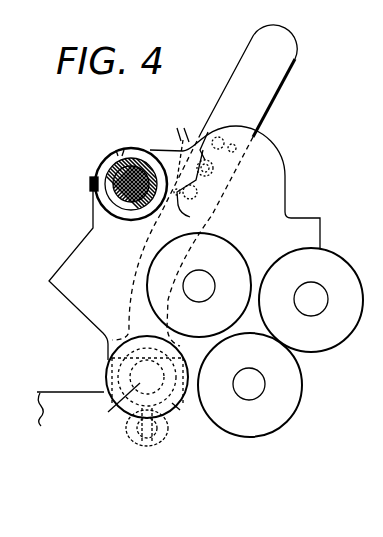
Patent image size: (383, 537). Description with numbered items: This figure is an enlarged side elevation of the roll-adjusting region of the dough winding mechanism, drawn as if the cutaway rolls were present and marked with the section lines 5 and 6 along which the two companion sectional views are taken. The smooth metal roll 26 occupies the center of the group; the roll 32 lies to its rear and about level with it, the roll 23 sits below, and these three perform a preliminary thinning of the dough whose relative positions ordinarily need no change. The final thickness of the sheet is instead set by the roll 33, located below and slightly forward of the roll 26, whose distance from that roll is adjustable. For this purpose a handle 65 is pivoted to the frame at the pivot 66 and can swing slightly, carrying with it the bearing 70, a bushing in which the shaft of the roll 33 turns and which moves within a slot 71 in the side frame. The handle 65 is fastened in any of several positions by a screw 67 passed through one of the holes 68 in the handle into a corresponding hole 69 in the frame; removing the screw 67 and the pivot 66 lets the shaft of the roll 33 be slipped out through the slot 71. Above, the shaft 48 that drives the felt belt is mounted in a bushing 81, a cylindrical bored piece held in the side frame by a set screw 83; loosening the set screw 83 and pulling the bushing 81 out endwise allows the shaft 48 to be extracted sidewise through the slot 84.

The section line 5- 5 is at (96, 478).
The section line 6- 6 is at (131, 90).
The handle 65 is at (285, 78).
The holes in the handle 68 is at (205, 132).
The holes in the frame 69 is at (250, 142).
The screw 67 is at (209, 194).
The shaft 48 is at (117, 205).
The bushing 81 is at (118, 186).
The set screw 83 is at (90, 181).
The slot 84 is at (118, 150).
The smooth metal roll 26 is at (199, 285).
The smooth metal roll 32 is at (311, 300).
The roll 23 is at (288, 437).
The slot in the side frame 71 is at (120, 372).
The bearing 70 is at (118, 403).
The pivot 66 is at (137, 436).
The roll 33 is at (176, 407).